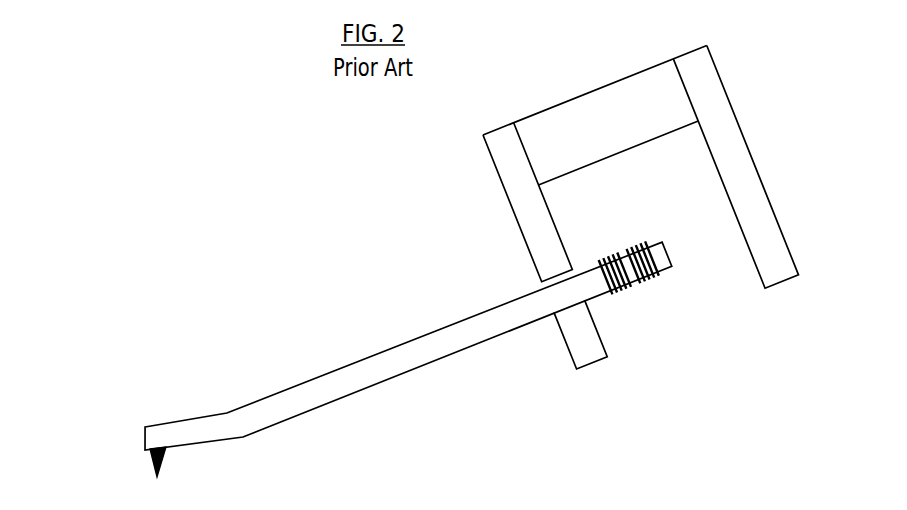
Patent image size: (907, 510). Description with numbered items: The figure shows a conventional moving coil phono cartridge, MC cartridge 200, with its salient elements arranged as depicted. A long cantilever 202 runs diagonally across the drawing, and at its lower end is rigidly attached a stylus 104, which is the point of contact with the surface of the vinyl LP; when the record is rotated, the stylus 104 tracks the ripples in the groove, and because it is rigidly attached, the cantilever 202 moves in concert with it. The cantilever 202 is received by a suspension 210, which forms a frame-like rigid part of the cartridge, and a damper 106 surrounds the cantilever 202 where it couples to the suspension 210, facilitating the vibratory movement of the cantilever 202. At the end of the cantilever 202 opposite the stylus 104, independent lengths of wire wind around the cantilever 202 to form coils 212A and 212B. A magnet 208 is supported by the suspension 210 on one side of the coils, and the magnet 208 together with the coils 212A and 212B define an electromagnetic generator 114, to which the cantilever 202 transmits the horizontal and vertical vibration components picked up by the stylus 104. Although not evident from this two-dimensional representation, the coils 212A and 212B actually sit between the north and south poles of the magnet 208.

The MC cartridge 200 is at (301, 198).
The magnet 208 is at (582, 127).
The suspension 210 is at (743, 157).
The electromagnetic generator 114 is at (650, 190).
The damper 106 is at (542, 275).
The cantilever 202 is at (408, 343).
The coil 212A is at (615, 297).
The coil 212B is at (645, 284).
The stylus 104 is at (158, 467).